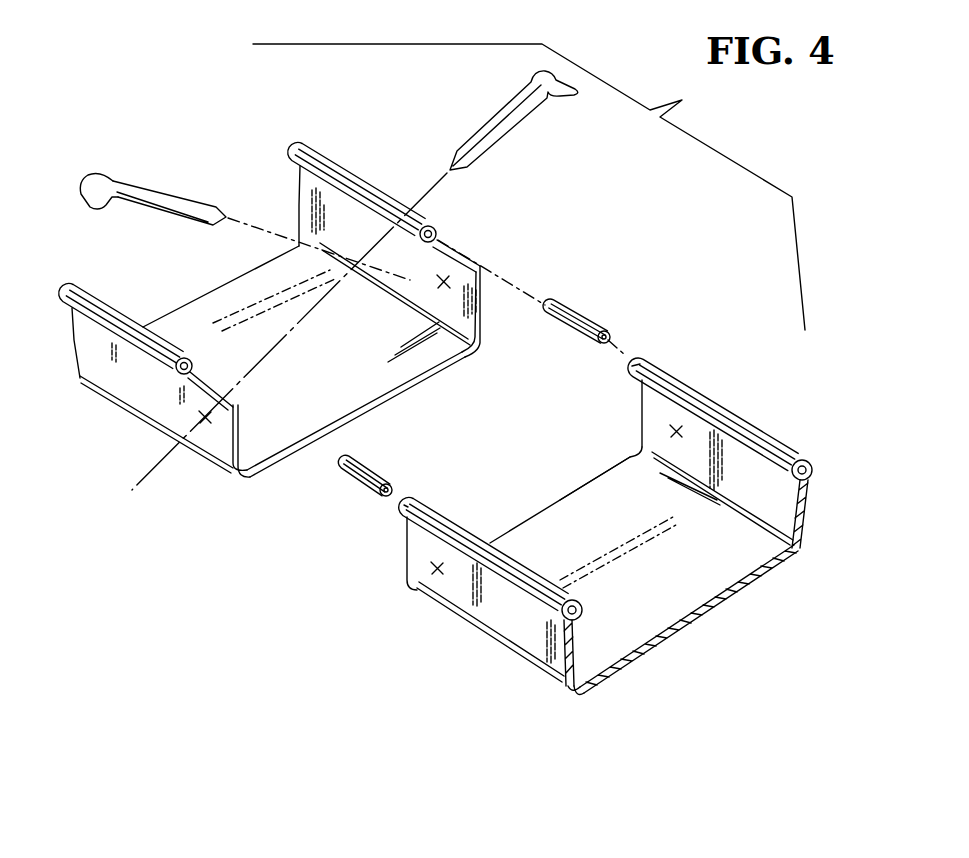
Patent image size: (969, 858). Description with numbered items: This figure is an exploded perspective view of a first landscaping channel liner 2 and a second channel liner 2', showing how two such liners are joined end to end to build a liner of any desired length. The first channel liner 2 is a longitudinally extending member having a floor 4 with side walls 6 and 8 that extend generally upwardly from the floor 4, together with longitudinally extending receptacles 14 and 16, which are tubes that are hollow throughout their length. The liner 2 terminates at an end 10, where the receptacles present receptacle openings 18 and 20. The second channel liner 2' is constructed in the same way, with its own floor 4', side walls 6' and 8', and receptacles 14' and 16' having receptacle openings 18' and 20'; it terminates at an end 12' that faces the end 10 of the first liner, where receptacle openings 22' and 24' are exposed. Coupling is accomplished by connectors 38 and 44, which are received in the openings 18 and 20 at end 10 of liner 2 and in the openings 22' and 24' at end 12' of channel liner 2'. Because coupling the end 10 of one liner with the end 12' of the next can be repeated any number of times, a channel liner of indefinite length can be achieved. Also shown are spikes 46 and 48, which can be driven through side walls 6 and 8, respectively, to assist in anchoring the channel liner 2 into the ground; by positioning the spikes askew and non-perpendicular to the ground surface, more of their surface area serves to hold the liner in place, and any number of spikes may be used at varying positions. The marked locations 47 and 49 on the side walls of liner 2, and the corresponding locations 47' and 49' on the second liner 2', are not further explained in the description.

The landscaping channel liner 2 is at (272, 290).
The floor 4 is at (311, 361).
The side wall 6 is at (152, 390).
The side wall 8 is at (387, 238).
The end 10 is at (417, 382).
The receptacle 14 is at (121, 320).
The receptacle 16 is at (356, 188).
The receptacle opening 18 is at (210, 355).
The receptacle opening 20 is at (466, 221).
The connector 38 is at (353, 478).
The connector 44 is at (577, 317).
The spike 46 is at (177, 203).
The fastening point 47 is at (476, 258).
The spike 48 is at (498, 138).
The fastening point 49 is at (203, 463).
The second channel liner 2' is at (607, 507).
The floor 4' is at (644, 570).
The side wall 6' is at (490, 601).
The side wall 8' is at (725, 464).
The end 12' is at (578, 476).
The receptacle 14' is at (483, 543).
The receptacle 16' is at (713, 403).
The receptacle opening 18' is at (595, 607).
The receptacle opening 20' is at (801, 446).
The receptacle opening 22' is at (381, 524).
The receptacle opening 24' is at (608, 376).
The fastening point 47' is at (686, 448).
The fastening point 49' is at (394, 576).